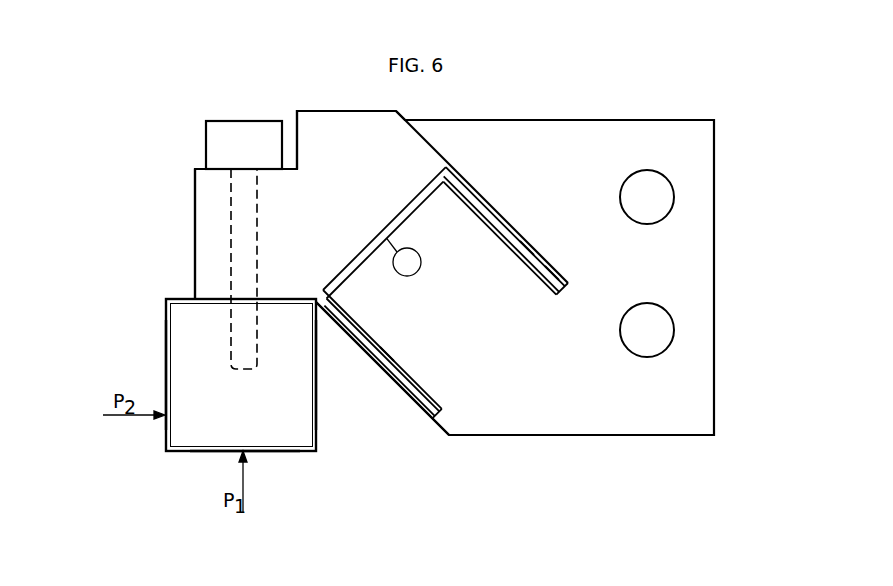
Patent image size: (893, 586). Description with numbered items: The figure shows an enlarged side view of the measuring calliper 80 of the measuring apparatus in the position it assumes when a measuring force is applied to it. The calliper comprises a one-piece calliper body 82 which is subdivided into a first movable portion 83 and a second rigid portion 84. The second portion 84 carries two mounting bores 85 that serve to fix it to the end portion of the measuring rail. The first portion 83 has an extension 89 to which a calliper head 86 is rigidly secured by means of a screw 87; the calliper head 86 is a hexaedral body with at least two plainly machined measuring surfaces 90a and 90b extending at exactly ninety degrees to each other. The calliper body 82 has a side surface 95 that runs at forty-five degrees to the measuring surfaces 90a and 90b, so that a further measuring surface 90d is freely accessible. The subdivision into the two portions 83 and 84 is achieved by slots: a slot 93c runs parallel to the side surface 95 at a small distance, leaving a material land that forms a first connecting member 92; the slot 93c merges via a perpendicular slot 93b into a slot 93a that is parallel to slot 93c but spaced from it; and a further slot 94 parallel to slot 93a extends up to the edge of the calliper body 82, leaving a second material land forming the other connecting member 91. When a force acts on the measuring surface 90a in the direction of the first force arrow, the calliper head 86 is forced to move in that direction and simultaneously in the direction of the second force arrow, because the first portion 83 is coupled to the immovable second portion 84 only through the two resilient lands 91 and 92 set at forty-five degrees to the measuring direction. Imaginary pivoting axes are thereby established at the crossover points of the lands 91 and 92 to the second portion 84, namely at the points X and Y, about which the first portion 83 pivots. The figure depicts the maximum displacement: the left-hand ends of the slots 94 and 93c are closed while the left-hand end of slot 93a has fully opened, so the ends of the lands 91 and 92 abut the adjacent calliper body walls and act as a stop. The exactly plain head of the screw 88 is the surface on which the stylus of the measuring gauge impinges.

The measuring calliper 80 is at (614, 462).
The calliper body 82 is at (455, 422).
The first movable portion 83 is at (348, 148).
The second rigid portion 84 is at (582, 150).
The mounting bores 85 is at (651, 193).
The calliper head 86 is at (278, 429).
The screw 87 is at (247, 230).
The screw 88 is at (227, 133).
The extension 89 is at (208, 270).
The measuring surface 90a is at (260, 460).
The measuring surface 90b is at (158, 371).
The further measuring surface 90d is at (323, 417).
The connecting member 91 is at (523, 247).
The first connecting member 92 is at (388, 368).
The slot 93a is at (530, 265).
The slot 93b is at (418, 202).
The slot 93c is at (420, 388).
The further slot 94 is at (552, 272).
The side surface 95 is at (382, 368).
The pivoting point X is at (446, 436).
The pivoting point Y is at (562, 297).